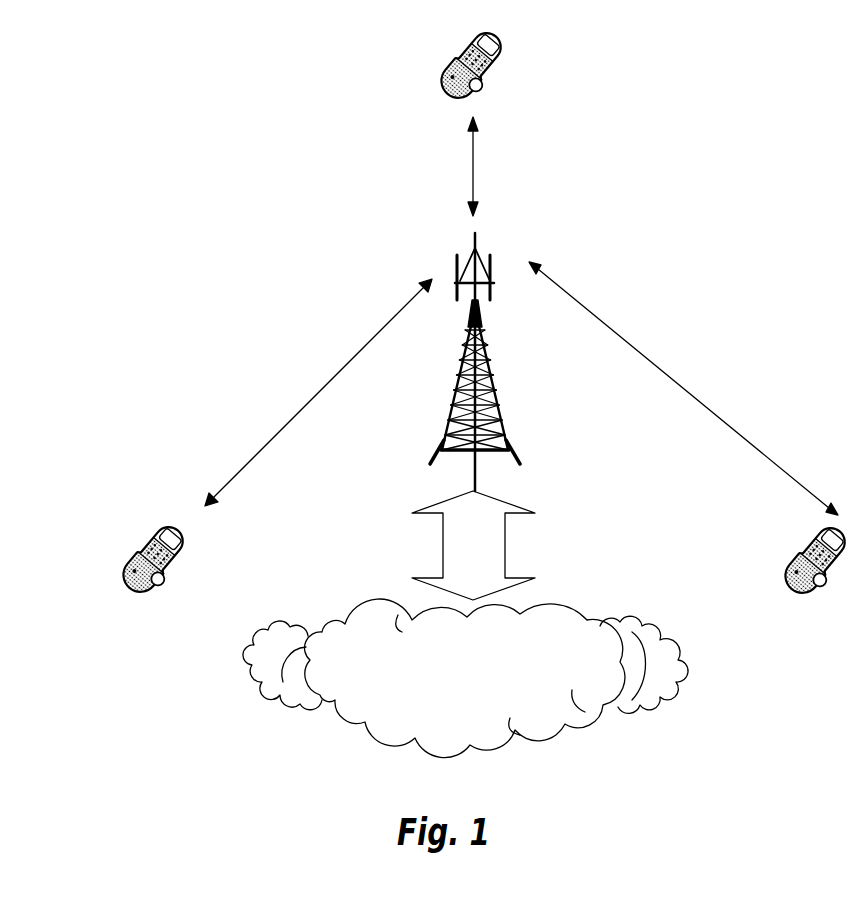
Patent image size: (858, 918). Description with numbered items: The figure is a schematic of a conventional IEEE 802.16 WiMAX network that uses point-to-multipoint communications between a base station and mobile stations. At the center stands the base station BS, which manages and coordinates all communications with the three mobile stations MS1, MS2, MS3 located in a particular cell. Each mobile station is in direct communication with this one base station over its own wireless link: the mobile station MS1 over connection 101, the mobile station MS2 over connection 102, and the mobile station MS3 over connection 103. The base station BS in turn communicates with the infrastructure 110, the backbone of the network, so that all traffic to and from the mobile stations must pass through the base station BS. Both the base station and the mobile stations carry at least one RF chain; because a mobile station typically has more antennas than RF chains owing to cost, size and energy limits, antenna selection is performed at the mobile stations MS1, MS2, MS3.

The connection 101 is at (473, 176).
The connection 102 is at (727, 424).
The connection 103 is at (350, 359).
The infrastructure 110 is at (623, 707).
The mobile station MS1 is at (442, 98).
The mobile station MS2 is at (783, 590).
The mobile station MS3 is at (120, 582).
The base station BS is at (478, 290).